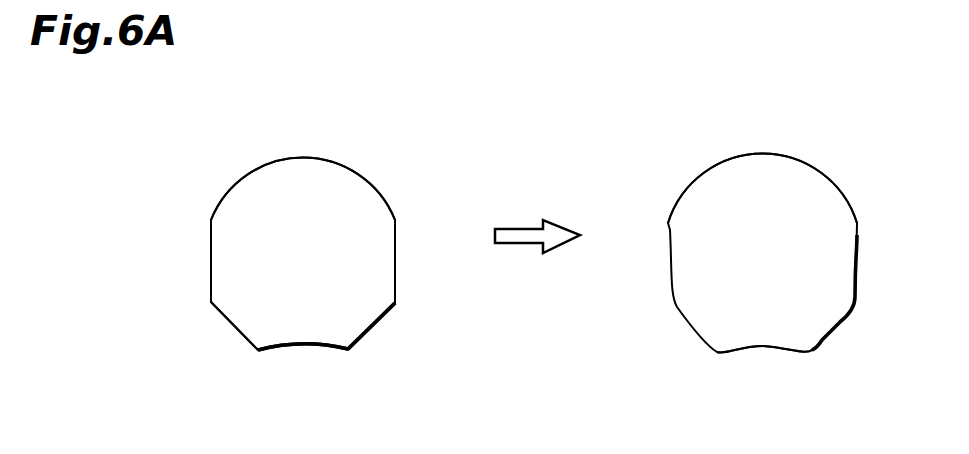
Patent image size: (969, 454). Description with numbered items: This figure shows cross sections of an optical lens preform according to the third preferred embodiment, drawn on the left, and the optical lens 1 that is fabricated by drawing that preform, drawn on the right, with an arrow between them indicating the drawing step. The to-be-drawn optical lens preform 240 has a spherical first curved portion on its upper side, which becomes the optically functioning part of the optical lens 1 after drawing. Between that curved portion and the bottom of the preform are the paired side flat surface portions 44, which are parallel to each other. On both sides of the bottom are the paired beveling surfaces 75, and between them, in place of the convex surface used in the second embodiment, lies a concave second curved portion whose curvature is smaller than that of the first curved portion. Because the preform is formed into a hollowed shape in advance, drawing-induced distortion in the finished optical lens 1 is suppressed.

The to-be-drawn optical lens preform 240 is at (385, 145).
The spectacle lens 1 is at (845, 145).
The paired side flat surface portions 44 is at (211, 233).
The paired beveling surfaces 75 is at (227, 321).